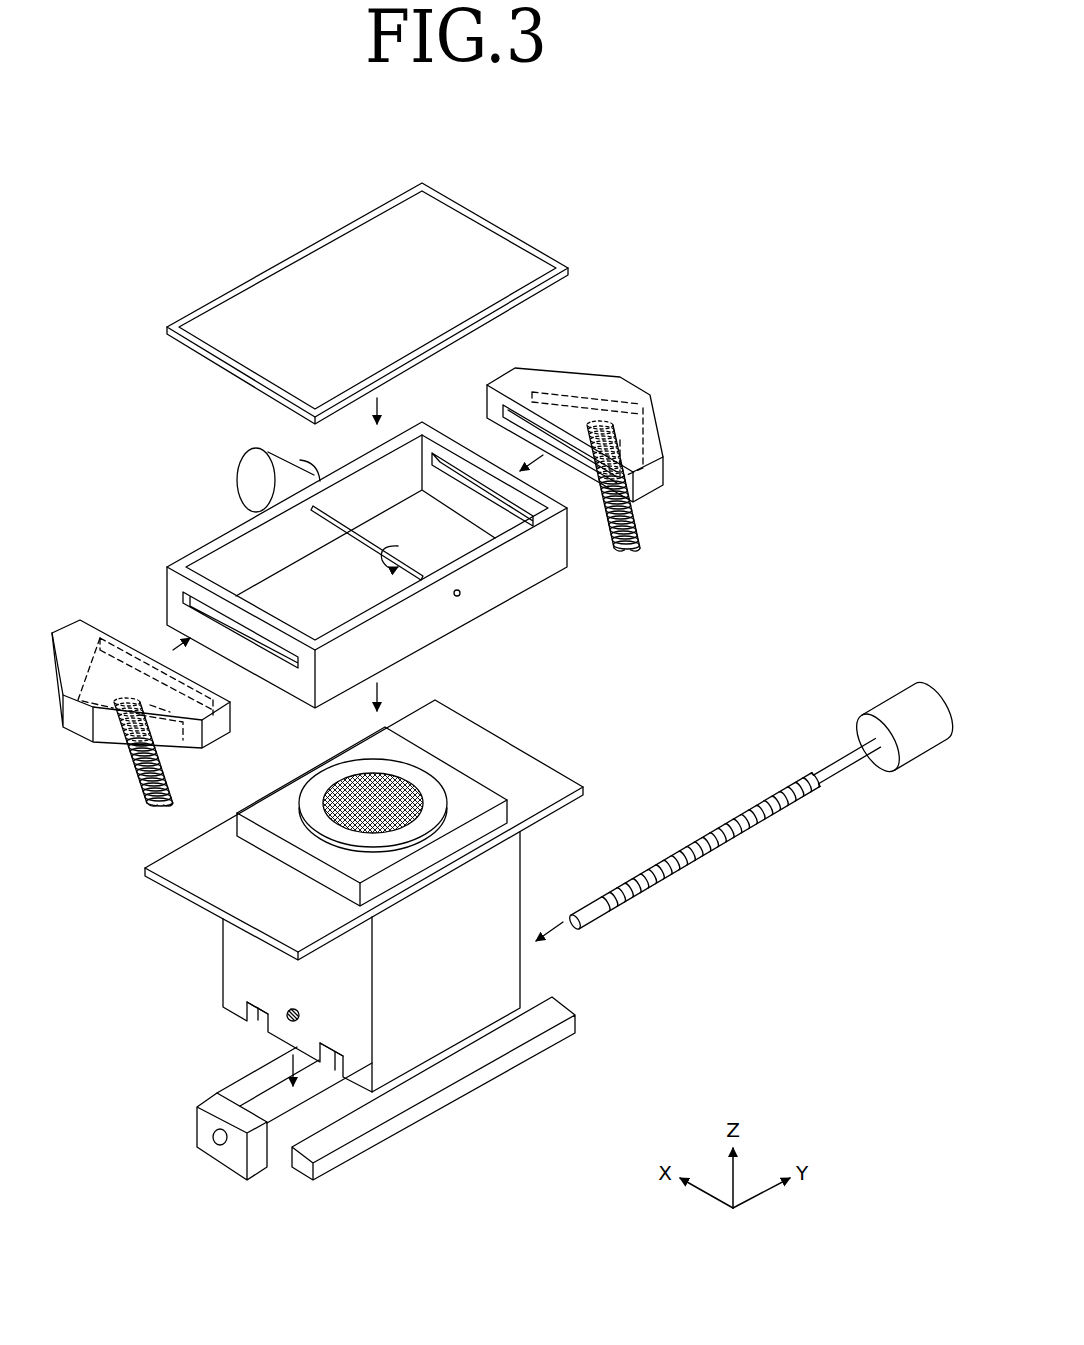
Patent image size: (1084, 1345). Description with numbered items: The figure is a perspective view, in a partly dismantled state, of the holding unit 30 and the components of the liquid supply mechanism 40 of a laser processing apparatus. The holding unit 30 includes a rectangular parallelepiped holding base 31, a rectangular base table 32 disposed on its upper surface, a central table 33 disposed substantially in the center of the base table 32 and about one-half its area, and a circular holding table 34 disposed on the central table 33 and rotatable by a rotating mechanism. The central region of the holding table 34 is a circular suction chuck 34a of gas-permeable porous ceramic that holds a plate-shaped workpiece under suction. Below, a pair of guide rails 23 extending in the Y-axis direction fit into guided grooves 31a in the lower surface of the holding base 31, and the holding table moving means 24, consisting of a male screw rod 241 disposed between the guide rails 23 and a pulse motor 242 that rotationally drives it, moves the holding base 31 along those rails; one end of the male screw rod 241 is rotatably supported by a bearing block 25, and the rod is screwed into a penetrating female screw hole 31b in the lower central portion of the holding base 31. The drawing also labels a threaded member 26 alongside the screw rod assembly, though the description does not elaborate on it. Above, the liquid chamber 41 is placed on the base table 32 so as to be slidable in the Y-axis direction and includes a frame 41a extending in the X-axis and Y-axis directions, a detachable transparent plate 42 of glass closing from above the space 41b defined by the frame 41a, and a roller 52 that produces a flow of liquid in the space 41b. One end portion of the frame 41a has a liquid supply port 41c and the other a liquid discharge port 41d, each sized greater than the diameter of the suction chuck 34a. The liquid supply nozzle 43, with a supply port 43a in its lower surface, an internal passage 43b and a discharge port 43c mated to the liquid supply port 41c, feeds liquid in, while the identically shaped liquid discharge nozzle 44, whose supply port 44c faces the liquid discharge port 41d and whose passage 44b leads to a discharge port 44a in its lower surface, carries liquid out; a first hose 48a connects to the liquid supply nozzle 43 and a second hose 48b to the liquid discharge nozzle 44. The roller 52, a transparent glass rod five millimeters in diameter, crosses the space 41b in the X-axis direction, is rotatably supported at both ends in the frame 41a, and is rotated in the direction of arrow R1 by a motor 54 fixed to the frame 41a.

The guide rail 23 is at (260, 1087).
The holding table moving means 24 is at (805, 645).
The male screw rod 241 is at (857, 758).
The pulse motor 242 is at (897, 707).
The bearing block 25 is at (212, 1152).
The screw shaft 26 is at (693, 841).
The holding unit 30 is at (545, 848).
The holding base 31 is at (505, 887).
The guided groove 31a is at (258, 1017).
The female screw hole 31b is at (283, 1008).
The base table 32 is at (583, 783).
The central table 33 is at (563, 787).
The holding table 34 is at (485, 800).
The suction chuck 34a is at (395, 782).
The liquid supply mechanism 40 is at (194, 509).
The liquid chamber 41 is at (522, 573).
The frame 41a is at (218, 563).
The space 41b is at (405, 590).
The liquid supply port 41c is at (181, 594).
The liquid discharge port 41d is at (463, 475).
The transparent plate 42 is at (332, 252).
The liquid supply nozzle 43 is at (90, 630).
The supply port 43a is at (90, 650).
The passage 43b is at (183, 720).
The discharge port 43c is at (215, 685).
The liquid discharge nozzle 44 is at (658, 415).
The discharge port 44a is at (600, 420).
The passage 44b is at (565, 408).
The supply port 44c is at (500, 410).
The first hose 48a is at (135, 783).
The second hose 48b is at (637, 528).
The roller 52 is at (338, 507).
The motor 54 is at (250, 472).
The arrow R1 is at (377, 571).